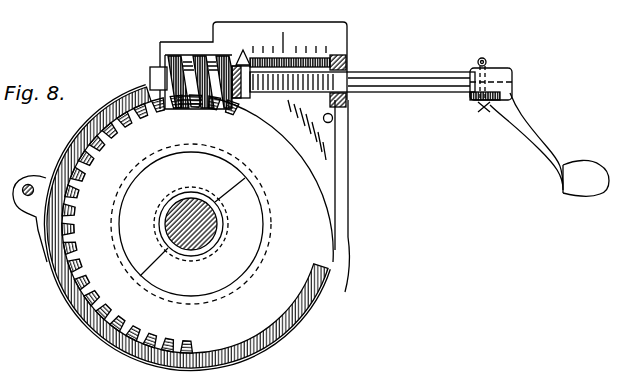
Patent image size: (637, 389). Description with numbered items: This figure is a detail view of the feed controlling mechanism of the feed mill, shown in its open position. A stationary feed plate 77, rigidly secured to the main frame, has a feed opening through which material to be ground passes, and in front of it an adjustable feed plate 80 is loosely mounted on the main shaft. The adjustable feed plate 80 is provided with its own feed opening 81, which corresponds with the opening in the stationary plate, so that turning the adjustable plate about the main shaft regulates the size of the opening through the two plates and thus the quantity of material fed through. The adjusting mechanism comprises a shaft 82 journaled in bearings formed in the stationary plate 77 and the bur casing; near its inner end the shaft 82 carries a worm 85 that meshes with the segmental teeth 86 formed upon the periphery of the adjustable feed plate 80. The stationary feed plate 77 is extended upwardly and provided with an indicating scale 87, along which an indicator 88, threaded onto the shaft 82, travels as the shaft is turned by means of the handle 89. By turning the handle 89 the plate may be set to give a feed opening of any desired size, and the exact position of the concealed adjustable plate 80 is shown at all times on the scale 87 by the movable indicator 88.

The stationary feed plate 77 is at (119, 98).
The adjustable feed plate 80 is at (207, 224).
The feed opening 81 is at (192, 228).
The shaft 82 is at (378, 82).
The worm 85 is at (180, 55).
The segmental teeth 86 is at (72, 160).
The indicating scale 87 is at (291, 31).
The indicator 88 is at (243, 50).
The handle 89 is at (540, 142).